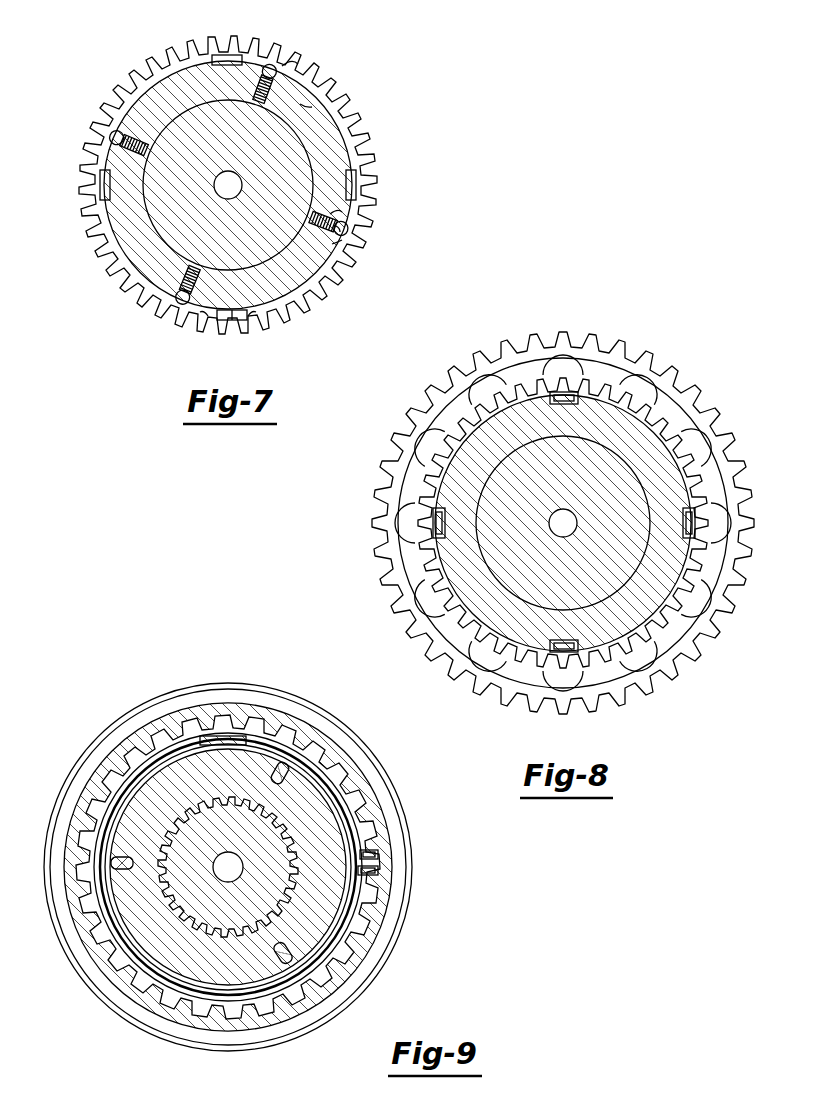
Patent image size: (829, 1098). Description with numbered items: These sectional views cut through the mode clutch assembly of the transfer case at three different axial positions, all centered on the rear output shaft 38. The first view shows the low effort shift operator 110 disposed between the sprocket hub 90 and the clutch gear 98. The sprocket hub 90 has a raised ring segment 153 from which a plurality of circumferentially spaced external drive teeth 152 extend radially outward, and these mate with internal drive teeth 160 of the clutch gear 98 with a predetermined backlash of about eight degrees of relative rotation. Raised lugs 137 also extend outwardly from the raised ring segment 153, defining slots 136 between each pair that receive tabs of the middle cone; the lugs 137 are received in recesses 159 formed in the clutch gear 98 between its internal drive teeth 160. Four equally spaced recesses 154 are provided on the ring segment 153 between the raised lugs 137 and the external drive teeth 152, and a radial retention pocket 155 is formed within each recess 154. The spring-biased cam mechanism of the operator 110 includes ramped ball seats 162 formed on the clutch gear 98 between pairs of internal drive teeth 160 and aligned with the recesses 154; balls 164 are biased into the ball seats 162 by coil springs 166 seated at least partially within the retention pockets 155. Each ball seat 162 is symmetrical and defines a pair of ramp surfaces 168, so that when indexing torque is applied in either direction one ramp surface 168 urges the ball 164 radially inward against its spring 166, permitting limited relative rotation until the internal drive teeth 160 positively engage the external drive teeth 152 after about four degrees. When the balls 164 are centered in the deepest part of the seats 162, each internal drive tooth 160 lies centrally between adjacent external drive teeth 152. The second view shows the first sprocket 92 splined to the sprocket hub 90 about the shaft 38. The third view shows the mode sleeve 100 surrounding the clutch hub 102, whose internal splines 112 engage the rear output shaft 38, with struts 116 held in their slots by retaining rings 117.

In FIG. 7, the rear output shaft 38 is at (292, 146).
In FIG. 8, the rear output shaft 38 is at (515, 548).
In FIG. 9, the rear output shaft 38 is at (278, 895).
In FIG. 7, the sprocket hub 90 is at (118, 238).
In FIG. 8, the sprocket hub 90 is at (470, 478).
In FIG. 8, the first sprocket 92 is at (566, 334).
In FIG. 7, the clutch gear 98 is at (108, 112).
In FIG. 8, the clutch gear 98 is at (466, 416).
In FIG. 9, the mode sleeve 100 is at (256, 712).
In FIG. 9, the clutch hub 102 is at (212, 726).
In FIG. 7, the low effort shift operator 110 is at (312, 40).
In FIG. 9, the internal splines 112 is at (290, 836).
In FIG. 9, the strut 116 is at (378, 855).
In FIG. 9, the retaining rings 117 is at (376, 872).
In FIG. 7, the slots 136 is at (232, 322).
In FIG. 7, the raised lugs 137 is at (210, 318).
In FIG. 7, the external drive teeth 152 is at (190, 62).
In FIG. 8, the external drive teeth 152 is at (498, 400).
In FIG. 7, the raised ring segment 153 is at (302, 105).
In FIG. 7, the recesses 154 is at (335, 245).
In FIG. 7, the retention pocket 155 is at (98, 175).
In FIG. 7, the recesses 159 is at (350, 182).
In FIG. 7, the internal drive teeth 160 is at (197, 58).
In FIG. 8, the internal drive teeth 160 is at (520, 386).
In FIG. 7, the ball seats 162 is at (292, 60).
In FIG. 7, the balls 164 is at (338, 226).
In FIG. 7, the coil springs 166 is at (335, 214).
In FIG. 7, the ramp surfaces 168 is at (258, 52).